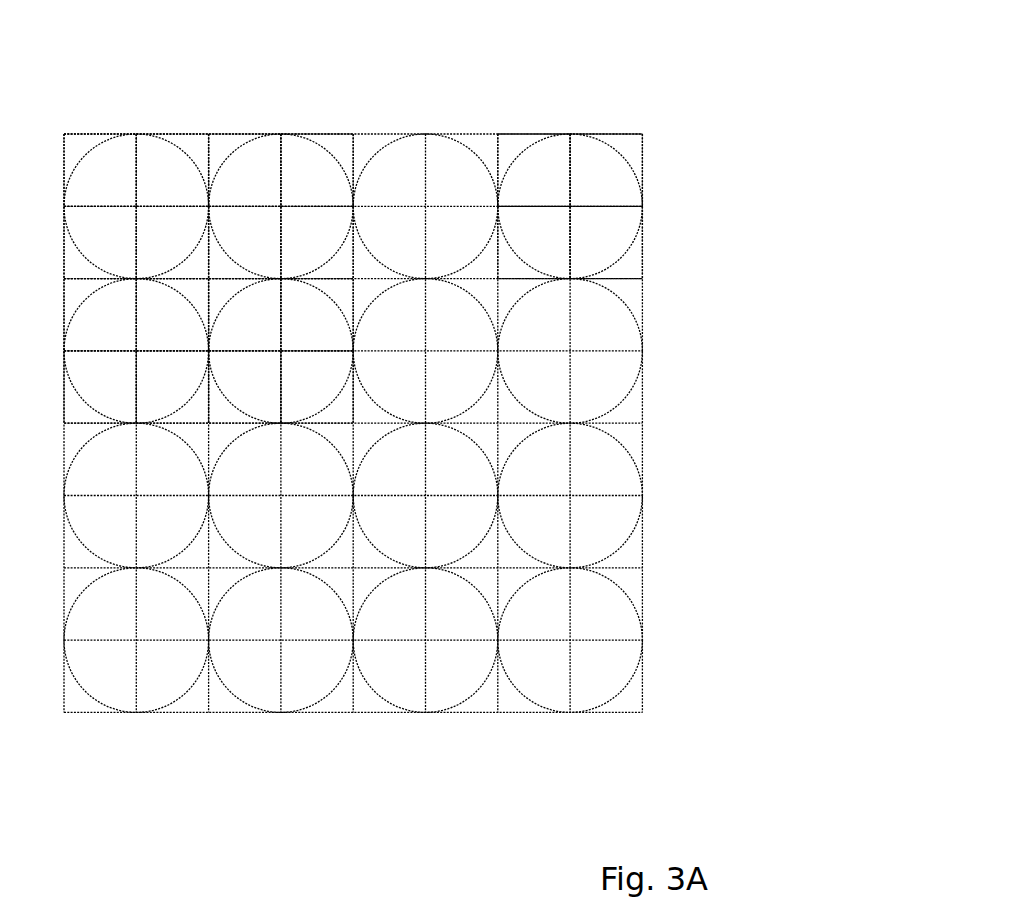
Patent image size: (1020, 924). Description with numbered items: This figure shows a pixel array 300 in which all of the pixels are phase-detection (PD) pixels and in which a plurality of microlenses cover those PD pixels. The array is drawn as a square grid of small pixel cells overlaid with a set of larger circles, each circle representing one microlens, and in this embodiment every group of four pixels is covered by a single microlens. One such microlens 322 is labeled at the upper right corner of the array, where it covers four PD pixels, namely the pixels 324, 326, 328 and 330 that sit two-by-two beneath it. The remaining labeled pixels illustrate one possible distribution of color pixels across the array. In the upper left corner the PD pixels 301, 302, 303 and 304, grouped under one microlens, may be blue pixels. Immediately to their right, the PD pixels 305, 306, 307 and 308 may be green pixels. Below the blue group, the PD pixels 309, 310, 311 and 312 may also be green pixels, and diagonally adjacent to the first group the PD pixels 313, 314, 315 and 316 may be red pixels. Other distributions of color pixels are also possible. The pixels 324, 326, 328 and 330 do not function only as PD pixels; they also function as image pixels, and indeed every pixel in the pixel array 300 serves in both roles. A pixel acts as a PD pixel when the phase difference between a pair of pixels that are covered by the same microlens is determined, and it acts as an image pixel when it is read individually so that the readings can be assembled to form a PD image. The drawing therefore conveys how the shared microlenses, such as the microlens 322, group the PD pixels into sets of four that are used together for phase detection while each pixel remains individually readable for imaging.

The pixel array 300 is at (132, 58).
The microlens 322 is at (384, 418).
The PD pixel 301 is at (84, 195).
The PD pixel 302 is at (150, 195).
The PD pixel 303 is at (84, 250).
The PD pixel 304 is at (147, 250).
The PD pixel 305 is at (230, 196).
The PD pixel 306 is at (293, 196).
The PD pixel 307 is at (230, 241).
The PD pixel 308 is at (293, 239).
The PD pixel 309 is at (82, 338).
The PD pixel 310 is at (147, 338).
The PD pixel 311 is at (82, 386).
The PD pixel 312 is at (147, 386).
The PD pixel 313 is at (230, 336).
The PD pixel 314 is at (292, 336).
The PD pixel 315 is at (232, 391).
The PD pixel 316 is at (292, 391).
The pixel 324 is at (513, 193).
The pixel 326 is at (583, 191).
The pixel 328 is at (518, 245).
The pixel 330 is at (583, 245).